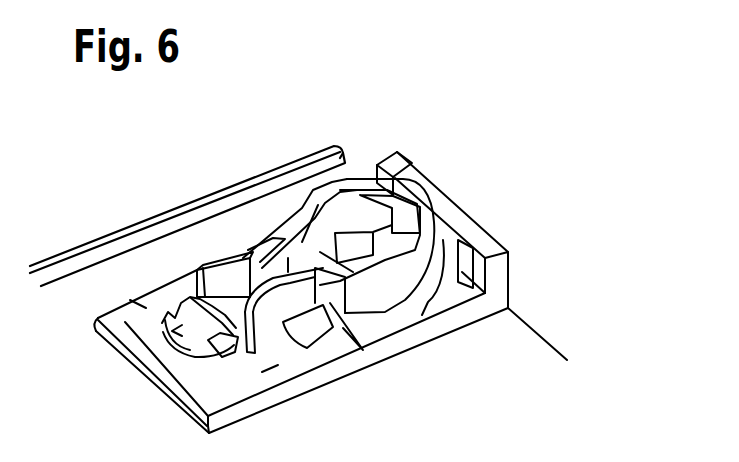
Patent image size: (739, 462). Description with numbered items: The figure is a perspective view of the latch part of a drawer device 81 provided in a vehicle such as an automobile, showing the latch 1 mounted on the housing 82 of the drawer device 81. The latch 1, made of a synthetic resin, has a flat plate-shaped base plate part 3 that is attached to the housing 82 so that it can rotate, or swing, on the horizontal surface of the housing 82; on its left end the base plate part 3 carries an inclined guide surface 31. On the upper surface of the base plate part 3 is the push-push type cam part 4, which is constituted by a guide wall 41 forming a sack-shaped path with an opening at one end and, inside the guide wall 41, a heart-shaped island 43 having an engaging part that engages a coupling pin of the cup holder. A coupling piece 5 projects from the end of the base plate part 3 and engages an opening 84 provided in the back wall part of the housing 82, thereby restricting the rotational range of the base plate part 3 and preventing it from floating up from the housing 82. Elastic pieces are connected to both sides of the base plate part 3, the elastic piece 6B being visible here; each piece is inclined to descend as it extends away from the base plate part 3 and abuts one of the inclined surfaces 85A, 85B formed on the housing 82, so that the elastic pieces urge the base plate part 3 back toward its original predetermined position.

The latch 1 is at (281, 220).
The base plate part 3 is at (222, 303).
The guide surface 31 is at (175, 333).
The cam part 4 is at (393, 176).
The guide wall 41 is at (322, 205).
The heart-shaped island 43 is at (352, 224).
The coupling piece 5 is at (458, 255).
The elastic piece 6B is at (318, 338).
The drawer device 81 is at (524, 304).
The housing 82 is at (513, 352).
The opening 84 is at (463, 230).
The inclined surface 85A is at (138, 305).
The inclined surface 85B is at (270, 368).